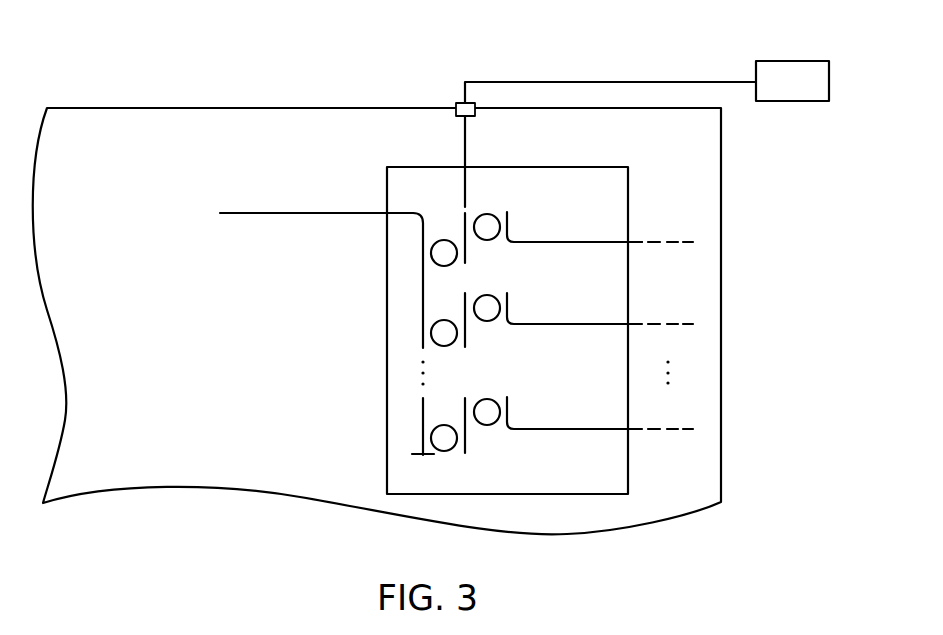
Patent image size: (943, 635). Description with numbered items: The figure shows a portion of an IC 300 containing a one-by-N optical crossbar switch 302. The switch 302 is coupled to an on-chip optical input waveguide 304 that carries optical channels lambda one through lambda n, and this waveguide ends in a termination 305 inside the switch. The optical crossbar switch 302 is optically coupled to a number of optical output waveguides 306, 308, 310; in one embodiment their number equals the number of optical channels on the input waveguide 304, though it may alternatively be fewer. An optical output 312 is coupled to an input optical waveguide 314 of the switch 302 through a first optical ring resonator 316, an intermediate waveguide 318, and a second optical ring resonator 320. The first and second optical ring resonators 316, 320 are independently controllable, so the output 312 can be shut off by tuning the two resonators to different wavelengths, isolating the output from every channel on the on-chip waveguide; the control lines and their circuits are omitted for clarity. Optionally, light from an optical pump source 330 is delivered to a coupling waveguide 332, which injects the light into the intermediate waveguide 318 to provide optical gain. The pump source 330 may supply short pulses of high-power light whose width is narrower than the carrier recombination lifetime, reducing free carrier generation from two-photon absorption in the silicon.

The IC 300 is at (722, 140).
The 1×N optical crossbar switch 302 is at (447, 167).
The on-chip optical input waveguide 304 is at (253, 216).
The termination 305 is at (433, 455).
The optical output waveguide 306 is at (635, 242).
The optical output waveguide 308 is at (635, 324).
The optical output waveguide 310 is at (632, 430).
The optical output 312 is at (583, 242).
The input optical waveguide 314 is at (422, 272).
The first optical ring resonator 316 is at (442, 240).
The intermediate waveguide 318 is at (466, 258).
The second optical ring resonator 320 is at (490, 214).
The optical pump source 330 is at (795, 61).
The coupling waveguide 332 is at (466, 184).